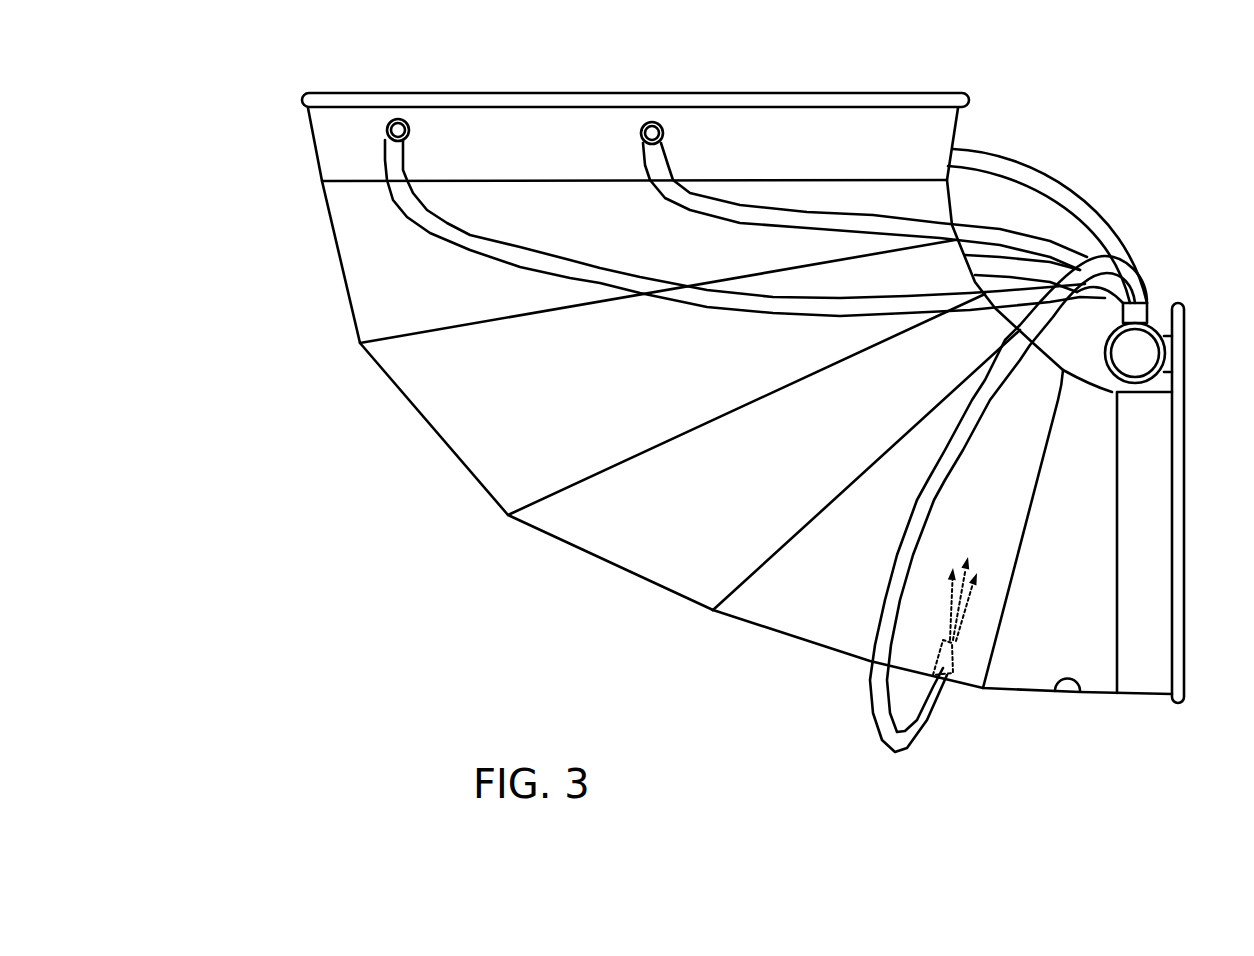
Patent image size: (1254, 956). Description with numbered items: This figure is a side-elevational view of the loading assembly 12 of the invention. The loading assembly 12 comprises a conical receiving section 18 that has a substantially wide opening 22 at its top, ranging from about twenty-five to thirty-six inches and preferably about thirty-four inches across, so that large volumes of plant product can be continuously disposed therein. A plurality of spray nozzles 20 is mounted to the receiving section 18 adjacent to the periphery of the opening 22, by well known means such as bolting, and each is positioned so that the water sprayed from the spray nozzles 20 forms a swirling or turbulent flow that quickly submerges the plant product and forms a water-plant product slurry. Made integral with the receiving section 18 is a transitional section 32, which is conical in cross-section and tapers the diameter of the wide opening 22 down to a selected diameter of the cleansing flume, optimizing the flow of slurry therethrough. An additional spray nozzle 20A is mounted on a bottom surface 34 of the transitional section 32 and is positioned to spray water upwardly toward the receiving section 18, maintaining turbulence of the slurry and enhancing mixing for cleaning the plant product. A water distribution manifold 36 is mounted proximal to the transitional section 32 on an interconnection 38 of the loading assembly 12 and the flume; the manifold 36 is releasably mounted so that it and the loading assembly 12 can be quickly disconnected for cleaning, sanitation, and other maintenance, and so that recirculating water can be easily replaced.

The loading assembly 12 is at (724, 445).
The receiving section 18 is at (344, 436).
The spray nozzles 20 is at (408, 125).
The additional spray nozzle 20A is at (955, 662).
The opening 22 is at (555, 138).
The transitional section 32 is at (798, 665).
The bottom surface 34 is at (1057, 692).
The water distribution manifold 36 is at (1103, 392).
The interconnection 38 is at (1185, 613).